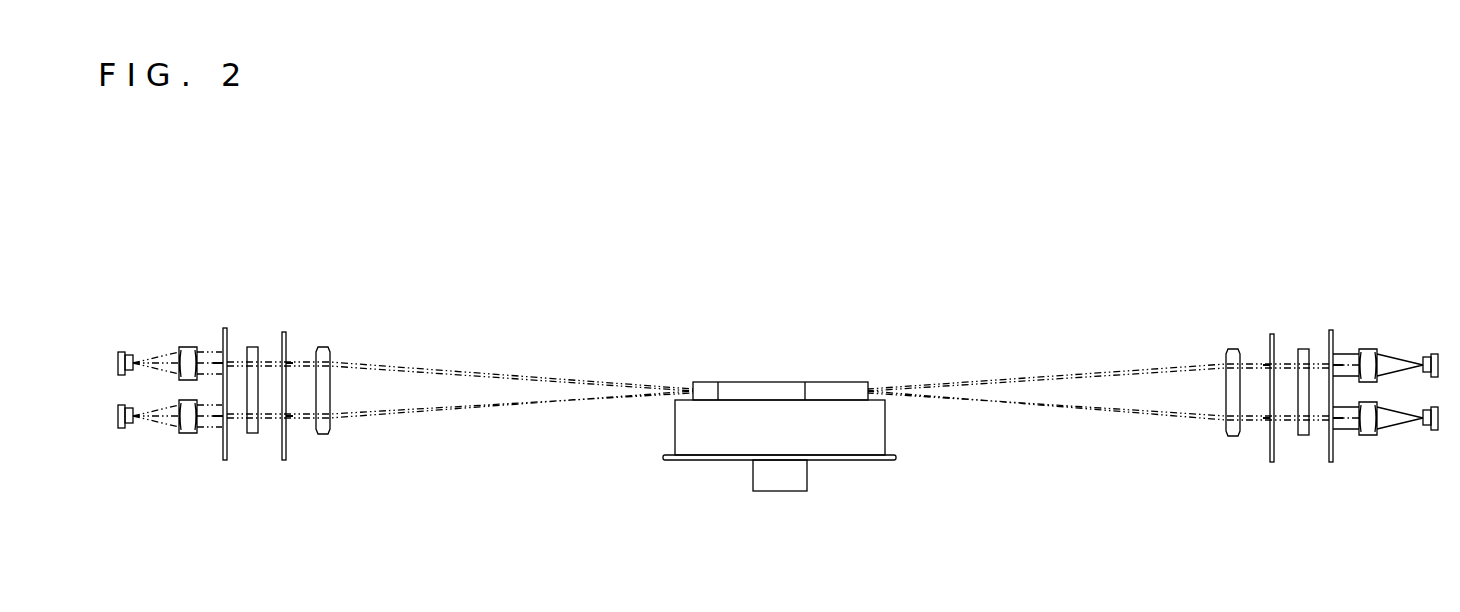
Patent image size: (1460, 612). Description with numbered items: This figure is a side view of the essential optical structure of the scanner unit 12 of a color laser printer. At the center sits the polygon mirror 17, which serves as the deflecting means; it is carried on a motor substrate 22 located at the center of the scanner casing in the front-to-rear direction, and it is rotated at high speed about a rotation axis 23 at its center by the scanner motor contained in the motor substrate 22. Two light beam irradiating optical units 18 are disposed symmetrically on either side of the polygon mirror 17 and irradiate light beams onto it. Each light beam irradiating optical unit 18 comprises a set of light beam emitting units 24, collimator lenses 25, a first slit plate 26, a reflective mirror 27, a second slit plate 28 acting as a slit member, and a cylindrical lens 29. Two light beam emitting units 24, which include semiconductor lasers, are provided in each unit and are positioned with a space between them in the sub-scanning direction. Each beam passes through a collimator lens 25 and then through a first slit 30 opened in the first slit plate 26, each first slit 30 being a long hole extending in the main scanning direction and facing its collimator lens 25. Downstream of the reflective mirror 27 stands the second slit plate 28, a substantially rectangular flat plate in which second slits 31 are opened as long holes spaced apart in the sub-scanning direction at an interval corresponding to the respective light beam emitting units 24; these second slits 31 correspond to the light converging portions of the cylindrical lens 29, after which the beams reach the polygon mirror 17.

The scanner unit 12 is at (768, 569).
The polygon mirror 17 is at (778, 384).
The light beam irradiating optical unit 18 is at (268, 316).
The motor substrate 22 is at (879, 431).
The rotation axis 23 is at (799, 476).
The light beam emitting unit 24 is at (125, 354).
The collimator lens 25 is at (188, 346).
The first slit plate 26 is at (226, 336).
The reflective mirror 27 is at (252, 434).
The second slit plate 28 is at (286, 336).
The cylindrical lens 29 is at (323, 349).
The first slit 30 is at (222, 361).
The second slit 31 is at (288, 366).